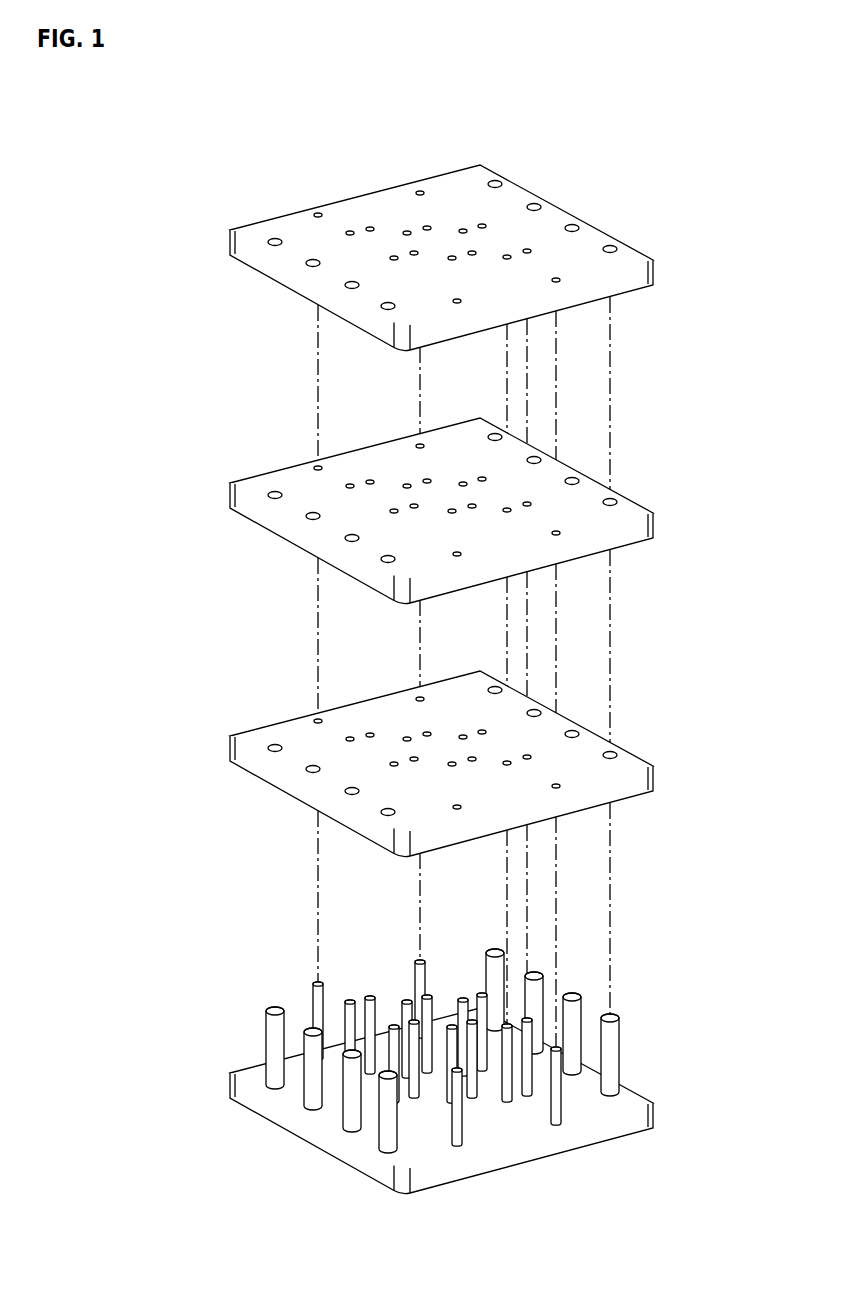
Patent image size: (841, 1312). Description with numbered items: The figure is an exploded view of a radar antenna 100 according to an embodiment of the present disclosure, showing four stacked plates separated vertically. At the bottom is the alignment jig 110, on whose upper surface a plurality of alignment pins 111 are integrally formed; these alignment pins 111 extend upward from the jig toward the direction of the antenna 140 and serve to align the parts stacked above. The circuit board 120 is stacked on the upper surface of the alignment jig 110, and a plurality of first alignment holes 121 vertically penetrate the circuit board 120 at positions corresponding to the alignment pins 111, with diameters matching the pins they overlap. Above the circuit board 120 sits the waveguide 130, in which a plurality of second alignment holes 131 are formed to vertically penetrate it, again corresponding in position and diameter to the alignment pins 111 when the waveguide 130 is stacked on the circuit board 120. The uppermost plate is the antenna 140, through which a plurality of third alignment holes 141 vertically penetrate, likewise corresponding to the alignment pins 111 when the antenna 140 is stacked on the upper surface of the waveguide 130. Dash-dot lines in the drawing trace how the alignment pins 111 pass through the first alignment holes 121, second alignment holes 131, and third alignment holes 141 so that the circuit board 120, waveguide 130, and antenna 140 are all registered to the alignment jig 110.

The radar antenna 100 is at (258, 134).
The alignment jig 110 is at (656, 1116).
The alignment pins 111 is at (609, 1057).
The circuit board 120 is at (656, 782).
The first alignment holes 121 is at (614, 755).
The waveguide 130 is at (656, 528).
The second alignment holes 131 is at (614, 500).
The antenna 140 is at (656, 275).
The third alignment holes 141 is at (614, 248).